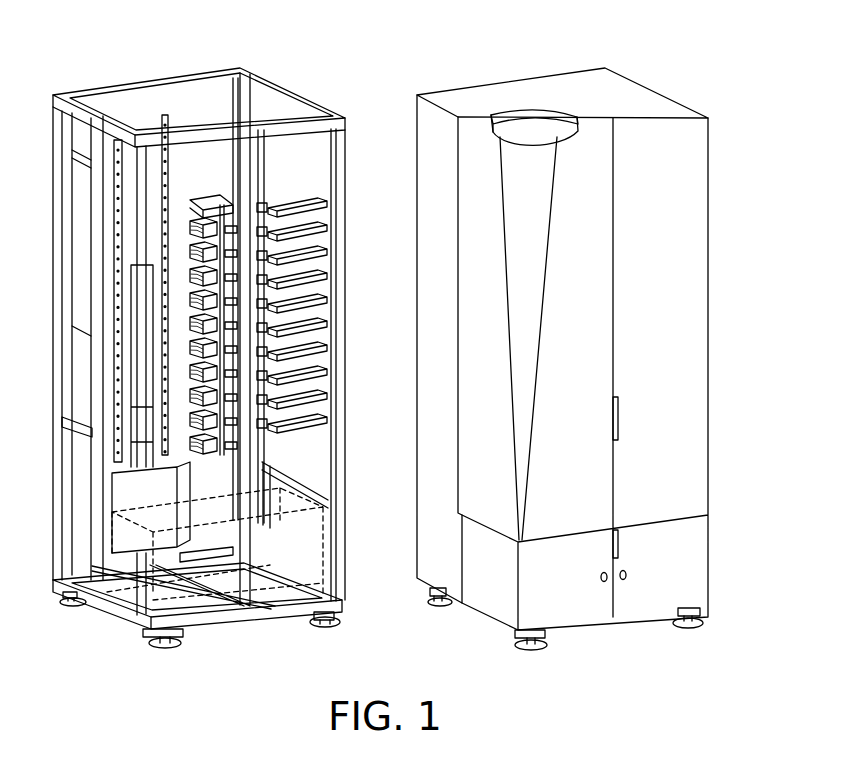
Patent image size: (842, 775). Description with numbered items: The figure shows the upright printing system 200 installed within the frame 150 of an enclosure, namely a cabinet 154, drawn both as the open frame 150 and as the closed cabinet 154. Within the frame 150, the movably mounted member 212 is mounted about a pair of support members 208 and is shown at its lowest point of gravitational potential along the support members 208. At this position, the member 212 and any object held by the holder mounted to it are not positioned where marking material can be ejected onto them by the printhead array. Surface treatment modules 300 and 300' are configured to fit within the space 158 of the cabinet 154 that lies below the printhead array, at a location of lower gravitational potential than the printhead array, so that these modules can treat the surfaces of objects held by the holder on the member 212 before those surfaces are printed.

The system 200 is at (297, 74).
The frame 150 is at (347, 157).
The cabinet 154 is at (651, 90).
The space 158 is at (118, 619).
The support members 208 is at (173, 195).
The moveably mounted member 212 is at (158, 498).
The surface treatment module 300 is at (259, 557).
The surface treatment module 300' is at (259, 557).